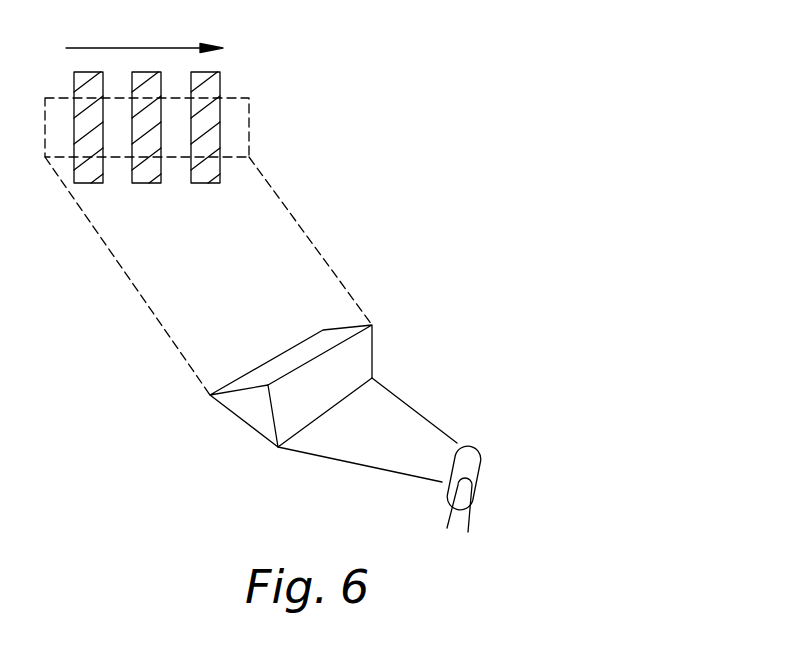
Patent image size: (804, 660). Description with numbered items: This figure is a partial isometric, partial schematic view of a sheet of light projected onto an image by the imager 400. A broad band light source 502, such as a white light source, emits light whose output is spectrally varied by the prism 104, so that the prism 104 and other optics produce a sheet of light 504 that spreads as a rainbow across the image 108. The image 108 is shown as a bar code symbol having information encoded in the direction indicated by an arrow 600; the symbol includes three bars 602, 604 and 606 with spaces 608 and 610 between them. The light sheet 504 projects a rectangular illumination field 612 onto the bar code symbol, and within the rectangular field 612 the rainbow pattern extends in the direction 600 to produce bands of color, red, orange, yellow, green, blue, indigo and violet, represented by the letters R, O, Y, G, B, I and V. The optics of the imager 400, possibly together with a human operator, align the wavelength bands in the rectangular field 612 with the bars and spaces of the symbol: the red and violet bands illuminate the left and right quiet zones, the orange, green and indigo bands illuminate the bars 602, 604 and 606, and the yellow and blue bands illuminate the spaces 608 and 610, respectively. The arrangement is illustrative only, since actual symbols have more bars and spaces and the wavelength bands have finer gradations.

The imager 400 is at (571, 344).
The arrow 600 is at (172, 47).
The rectangular illumination field 612 is at (250, 130).
The image 108 is at (228, 87).
The bar 602 is at (92, 183).
The bar 604 is at (147, 183).
The bar 606 is at (203, 183).
The space 608 is at (118, 172).
The space 610 is at (175, 175).
The sheet of light 504 is at (318, 250).
The prism 104 is at (373, 343).
The broad band light source 502 is at (482, 462).